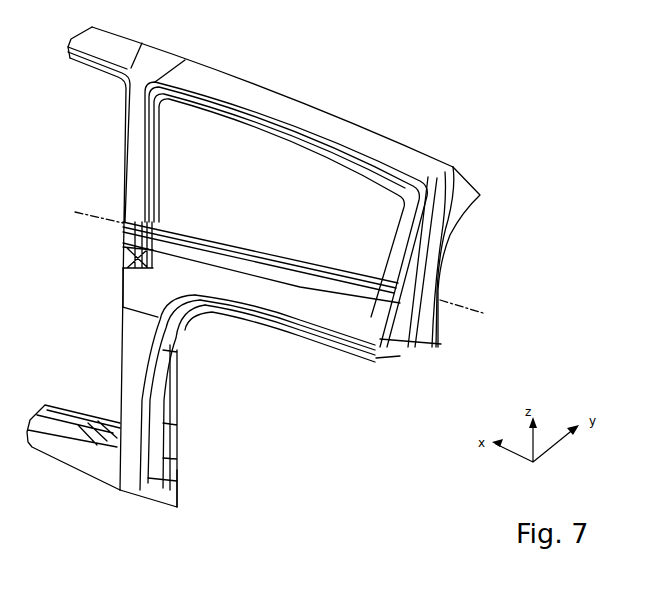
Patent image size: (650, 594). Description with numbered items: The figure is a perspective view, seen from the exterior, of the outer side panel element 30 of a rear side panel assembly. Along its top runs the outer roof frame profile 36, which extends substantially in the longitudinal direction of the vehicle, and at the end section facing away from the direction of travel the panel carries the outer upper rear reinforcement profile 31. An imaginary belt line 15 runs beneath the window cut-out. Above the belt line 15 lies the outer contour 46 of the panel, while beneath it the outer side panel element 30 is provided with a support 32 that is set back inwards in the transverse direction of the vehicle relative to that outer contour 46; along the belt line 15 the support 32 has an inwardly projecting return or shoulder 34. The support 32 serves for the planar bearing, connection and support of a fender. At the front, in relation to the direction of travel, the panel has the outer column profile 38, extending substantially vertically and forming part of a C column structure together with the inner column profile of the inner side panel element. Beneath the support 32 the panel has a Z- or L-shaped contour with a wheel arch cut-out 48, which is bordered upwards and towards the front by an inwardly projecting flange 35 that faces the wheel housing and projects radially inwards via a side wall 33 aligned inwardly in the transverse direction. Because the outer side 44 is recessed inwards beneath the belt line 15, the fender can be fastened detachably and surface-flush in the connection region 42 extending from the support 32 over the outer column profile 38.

The outer side panel element 30 is at (359, 107).
The outer roof frame profile 36 is at (306, 114).
The connection region 42 is at (222, 283).
The return or shoulder 34 is at (284, 250).
The outer upper rear reinforcement profile 31 is at (467, 192).
The outer contour 46 is at (132, 158).
The belt line 15 is at (489, 303).
The outer side 44 is at (88, 268).
The outer column profile 38 is at (123, 331).
The flange 35 is at (170, 400).
The support 32 is at (303, 320).
The side wall 33 is at (172, 457).
The wheel arch cut-out 48 is at (264, 425).